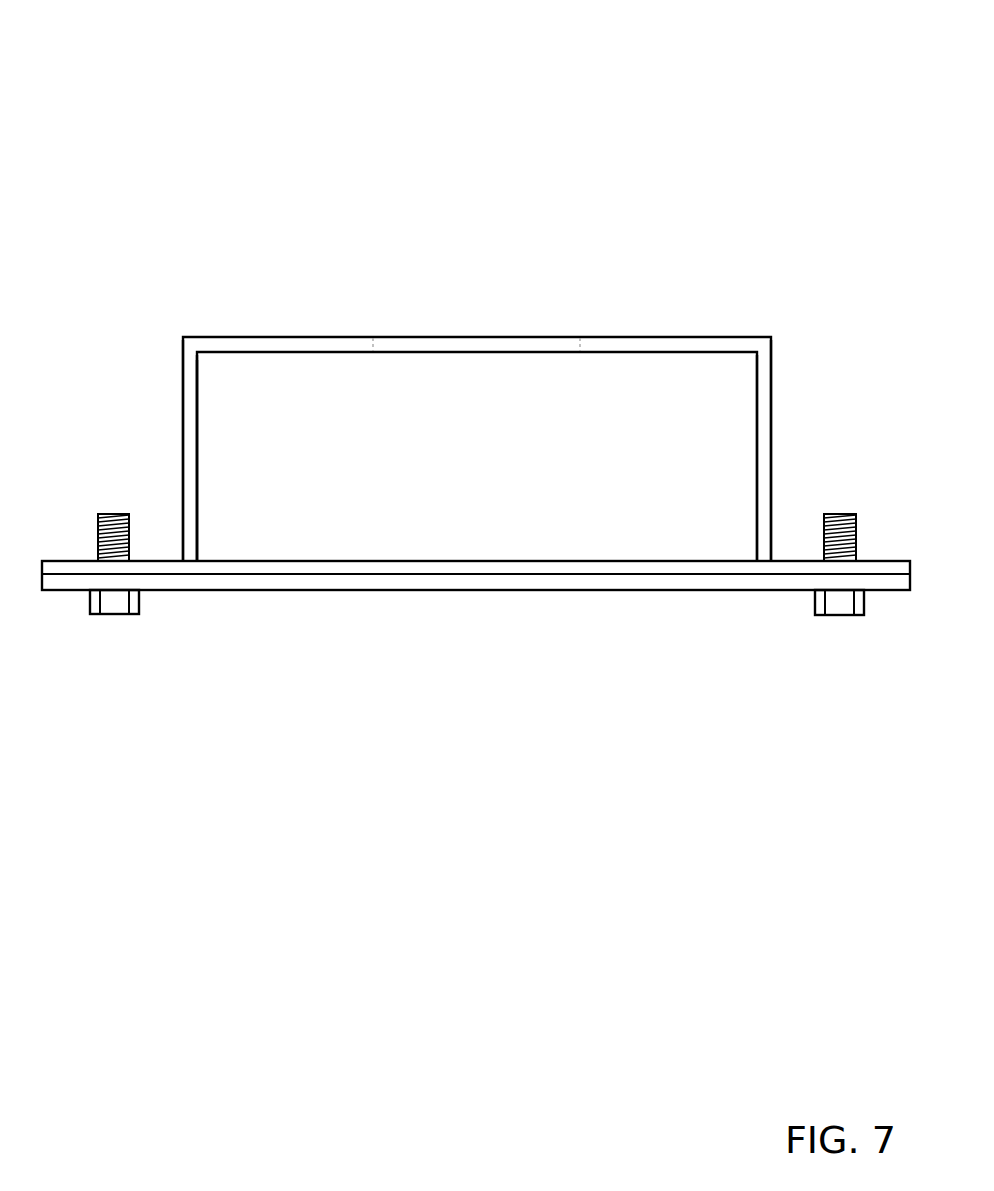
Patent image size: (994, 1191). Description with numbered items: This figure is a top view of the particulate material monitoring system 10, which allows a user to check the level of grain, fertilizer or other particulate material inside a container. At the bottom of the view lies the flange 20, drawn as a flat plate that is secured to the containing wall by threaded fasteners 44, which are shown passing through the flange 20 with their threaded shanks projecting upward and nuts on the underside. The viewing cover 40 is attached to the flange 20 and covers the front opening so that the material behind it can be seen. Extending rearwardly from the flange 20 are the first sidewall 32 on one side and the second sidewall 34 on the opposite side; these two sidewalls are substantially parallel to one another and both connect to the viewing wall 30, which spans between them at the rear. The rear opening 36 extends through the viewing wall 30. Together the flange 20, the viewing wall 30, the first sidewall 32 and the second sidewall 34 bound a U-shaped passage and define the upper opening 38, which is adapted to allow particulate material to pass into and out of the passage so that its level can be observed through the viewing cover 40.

The particulate material monitoring system 10 is at (690, 84).
The flange 20 is at (74, 562).
The viewing wall 30 is at (670, 337).
The first sidewall 32 is at (772, 427).
The second sidewall 34 is at (181, 462).
The rear opening 36 is at (580, 347).
The upper opening 38 is at (197, 403).
The viewing cover 40 is at (268, 590).
The fasteners 44 is at (840, 615).